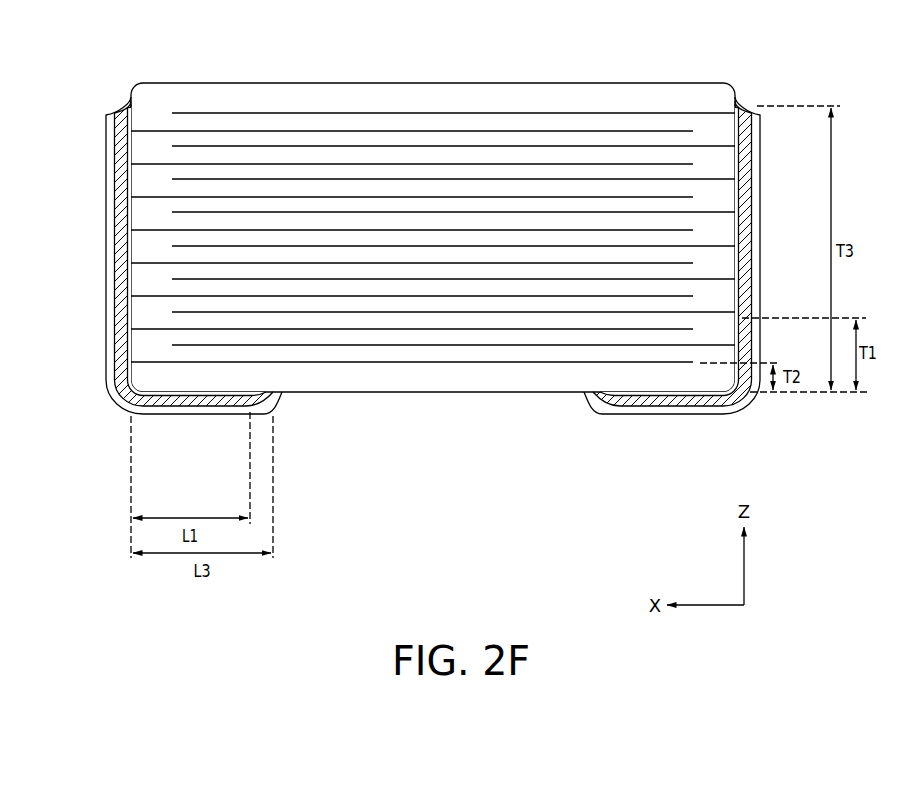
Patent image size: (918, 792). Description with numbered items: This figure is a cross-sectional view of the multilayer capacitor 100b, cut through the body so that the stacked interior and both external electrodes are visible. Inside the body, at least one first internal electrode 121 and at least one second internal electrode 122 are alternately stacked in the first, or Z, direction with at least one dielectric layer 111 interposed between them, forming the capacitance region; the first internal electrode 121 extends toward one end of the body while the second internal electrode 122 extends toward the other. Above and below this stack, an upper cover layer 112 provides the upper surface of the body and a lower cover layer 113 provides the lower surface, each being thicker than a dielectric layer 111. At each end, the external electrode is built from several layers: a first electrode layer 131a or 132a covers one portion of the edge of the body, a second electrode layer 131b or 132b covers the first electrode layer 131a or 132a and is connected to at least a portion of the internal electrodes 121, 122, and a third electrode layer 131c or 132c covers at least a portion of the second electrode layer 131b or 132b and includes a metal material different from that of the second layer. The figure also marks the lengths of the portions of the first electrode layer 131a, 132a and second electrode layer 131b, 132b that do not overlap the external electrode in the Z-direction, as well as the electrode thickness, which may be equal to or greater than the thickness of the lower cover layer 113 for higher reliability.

The multilayer capacitor 100b is at (413, 25).
The dielectric layer 111 is at (315, 126).
The upper cover layer 112 is at (381, 93).
The lower cover layer 113 is at (436, 382).
The first internal electrode 121 is at (157, 130).
The second internal electrode 122 is at (239, 113).
The first electrode layer 131a is at (116, 350).
The second electrode layer 131b is at (191, 406).
The third electrode layer 131c is at (109, 283).
The first electrode layer 132a is at (703, 396).
The second electrode layer 132b is at (667, 415).
The third electrode layer 132c is at (758, 262).